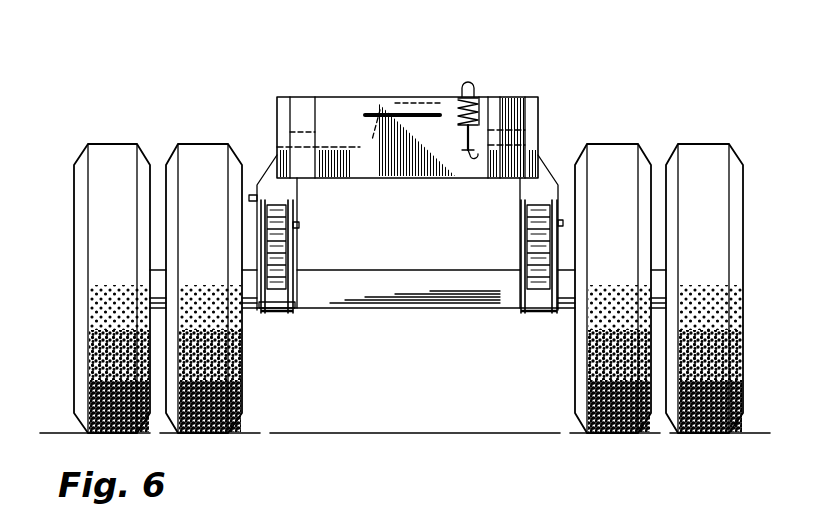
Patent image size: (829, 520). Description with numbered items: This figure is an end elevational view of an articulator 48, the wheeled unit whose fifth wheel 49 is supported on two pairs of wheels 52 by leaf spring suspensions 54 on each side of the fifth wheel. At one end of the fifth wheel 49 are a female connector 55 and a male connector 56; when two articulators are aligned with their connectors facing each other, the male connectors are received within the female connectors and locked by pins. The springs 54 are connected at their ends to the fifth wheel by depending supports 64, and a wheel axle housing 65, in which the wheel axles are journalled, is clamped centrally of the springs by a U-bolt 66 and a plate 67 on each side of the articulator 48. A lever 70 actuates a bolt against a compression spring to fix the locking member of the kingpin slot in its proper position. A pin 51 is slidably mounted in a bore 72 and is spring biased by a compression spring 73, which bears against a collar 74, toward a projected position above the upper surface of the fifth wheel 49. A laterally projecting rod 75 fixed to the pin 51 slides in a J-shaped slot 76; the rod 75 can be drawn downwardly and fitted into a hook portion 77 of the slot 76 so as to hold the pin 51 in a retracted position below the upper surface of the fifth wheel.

The articulator 48 is at (615, 71).
The fifth wheel 49 is at (352, 94).
The pin 51 is at (474, 88).
The wheels 52 is at (112, 288).
The leaf spring suspensions 54 is at (295, 246).
The female connector 55 is at (541, 110).
The male connector 56 is at (300, 102).
The depending supports 64 is at (533, 190).
The wheel axle housing 65 is at (407, 289).
The U-bolt 66 is at (293, 323).
The plate 67 is at (520, 223).
The lever 70 is at (365, 119).
The bore 72 is at (456, 118).
The compression spring 73 is at (448, 100).
The collar 74 is at (484, 97).
The laterally projecting rod 75 is at (464, 139).
The J-shaped slot 76 is at (467, 154).
The hook portion 77 is at (477, 156).